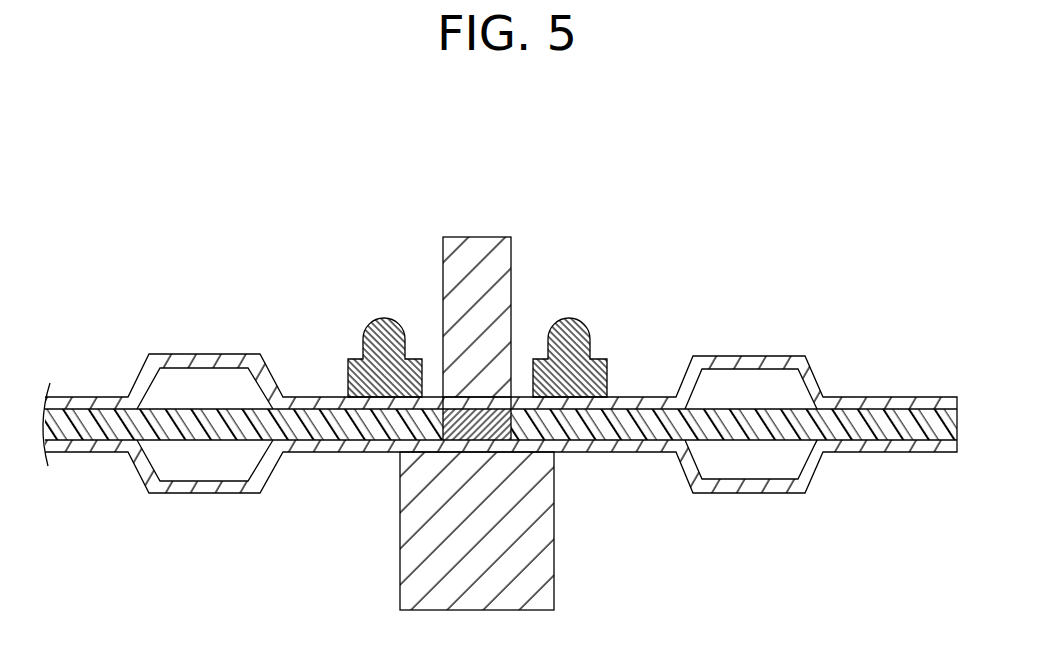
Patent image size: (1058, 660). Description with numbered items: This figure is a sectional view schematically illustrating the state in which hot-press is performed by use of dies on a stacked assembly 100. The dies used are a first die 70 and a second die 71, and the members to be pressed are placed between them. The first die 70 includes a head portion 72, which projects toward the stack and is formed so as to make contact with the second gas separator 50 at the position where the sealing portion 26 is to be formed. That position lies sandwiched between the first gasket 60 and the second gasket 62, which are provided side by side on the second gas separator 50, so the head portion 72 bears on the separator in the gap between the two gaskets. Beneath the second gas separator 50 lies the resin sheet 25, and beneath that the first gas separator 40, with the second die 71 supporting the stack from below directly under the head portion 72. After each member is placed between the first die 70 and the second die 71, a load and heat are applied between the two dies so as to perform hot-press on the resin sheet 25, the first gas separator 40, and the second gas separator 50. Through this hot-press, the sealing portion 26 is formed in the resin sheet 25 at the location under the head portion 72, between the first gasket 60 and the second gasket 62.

The wiring member 100 is at (500, 386).
The resin sheet 25 is at (500, 427).
The sealing portion 26 is at (462, 437).
The first gas separator 40 is at (816, 468).
The second gas separator 50 is at (811, 367).
The first gasket 60 is at (383, 318).
The second gasket 62 is at (548, 347).
The first die 70 is at (459, 301).
The second die 71 is at (540, 570).
The head portion 72 is at (445, 372).